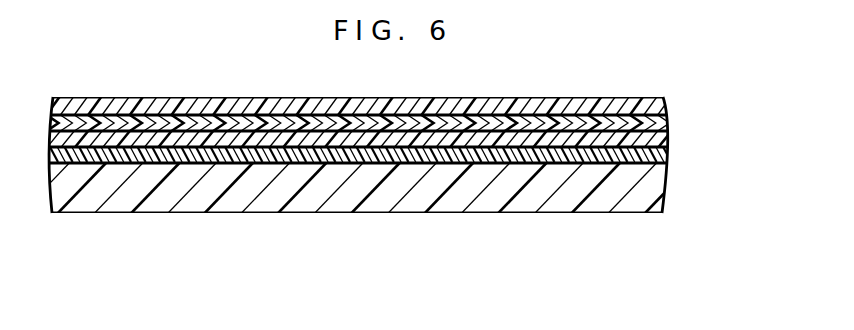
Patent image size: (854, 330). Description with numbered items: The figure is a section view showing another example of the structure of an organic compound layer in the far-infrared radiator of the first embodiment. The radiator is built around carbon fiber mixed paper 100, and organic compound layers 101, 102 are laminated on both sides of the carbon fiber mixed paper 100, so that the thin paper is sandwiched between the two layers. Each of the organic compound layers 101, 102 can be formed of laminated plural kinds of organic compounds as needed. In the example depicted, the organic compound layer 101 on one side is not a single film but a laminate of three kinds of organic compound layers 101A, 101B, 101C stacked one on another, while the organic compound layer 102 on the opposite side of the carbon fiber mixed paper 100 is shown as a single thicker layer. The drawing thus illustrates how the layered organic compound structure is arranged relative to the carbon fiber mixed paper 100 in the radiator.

The carbon fiber mixed paper 100 is at (305, 157).
The organic compound layer 101 is at (752, 80).
The organic compound layer 101A is at (663, 103).
The organic compound layer 101B is at (667, 120).
The organic compound layer 101C is at (667, 137).
The organic compound layer 102 is at (455, 200).